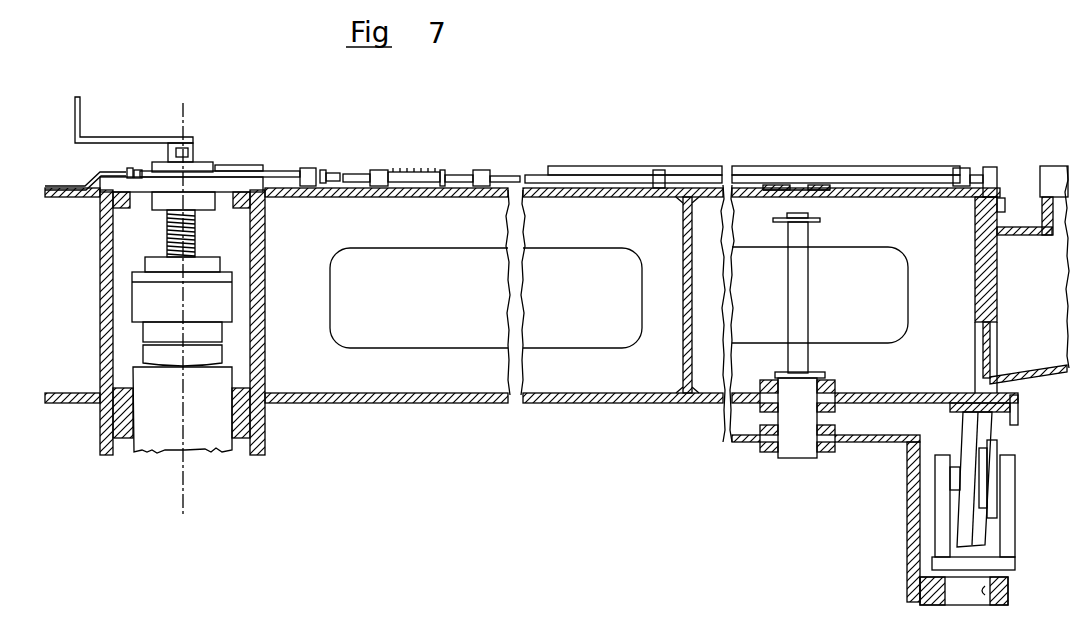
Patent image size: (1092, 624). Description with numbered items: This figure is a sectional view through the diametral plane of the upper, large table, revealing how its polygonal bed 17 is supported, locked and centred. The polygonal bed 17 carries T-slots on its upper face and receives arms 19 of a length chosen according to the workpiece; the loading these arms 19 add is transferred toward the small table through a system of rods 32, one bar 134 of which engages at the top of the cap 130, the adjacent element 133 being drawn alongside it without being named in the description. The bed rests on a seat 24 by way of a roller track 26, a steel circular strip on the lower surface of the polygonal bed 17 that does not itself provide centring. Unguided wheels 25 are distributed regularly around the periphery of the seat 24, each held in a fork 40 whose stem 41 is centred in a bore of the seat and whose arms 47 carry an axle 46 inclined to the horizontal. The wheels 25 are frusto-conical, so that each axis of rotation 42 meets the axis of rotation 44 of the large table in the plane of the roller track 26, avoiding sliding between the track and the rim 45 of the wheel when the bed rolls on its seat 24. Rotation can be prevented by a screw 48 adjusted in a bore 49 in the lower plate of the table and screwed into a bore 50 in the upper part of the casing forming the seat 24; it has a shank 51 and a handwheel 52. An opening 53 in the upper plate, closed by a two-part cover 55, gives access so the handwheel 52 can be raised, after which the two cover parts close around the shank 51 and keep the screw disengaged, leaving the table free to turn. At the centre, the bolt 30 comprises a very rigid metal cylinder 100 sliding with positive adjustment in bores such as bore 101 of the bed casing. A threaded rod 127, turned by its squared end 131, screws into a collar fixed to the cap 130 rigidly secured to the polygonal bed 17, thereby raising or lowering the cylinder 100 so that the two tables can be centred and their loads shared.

The cap 130 is at (125, 183).
The squared end 131 is at (176, 153).
The mounting plate 133 is at (213, 173).
The bar 134 is at (293, 170).
The threaded rod 127 is at (170, 235).
The system of rods 32 is at (505, 150).
The polygonal bed 17 is at (597, 220).
The two-part cover 55 is at (777, 188).
The opening 53 is at (817, 190).
The handwheel 52 is at (820, 221).
The shank 51 is at (802, 292).
The bore 49 is at (817, 390).
The screw 48 is at (793, 412).
The bore 50 is at (835, 446).
The roller track 26 is at (993, 405).
The rim 45 is at (990, 420).
The arm 19 is at (1029, 275).
The seat 24 is at (910, 470).
The axis of rotation 42 is at (1018, 482).
The axle 46 is at (1000, 490).
The fork arms 47 is at (943, 487).
The wheel 25 is at (972, 525).
The fork 40 is at (1017, 548).
The stem 41 is at (962, 592).
The bore 101 is at (132, 410).
The cylinder 100 is at (142, 438).
The bolt 30 is at (155, 458).
The axis of rotation 44 is at (208, 312).